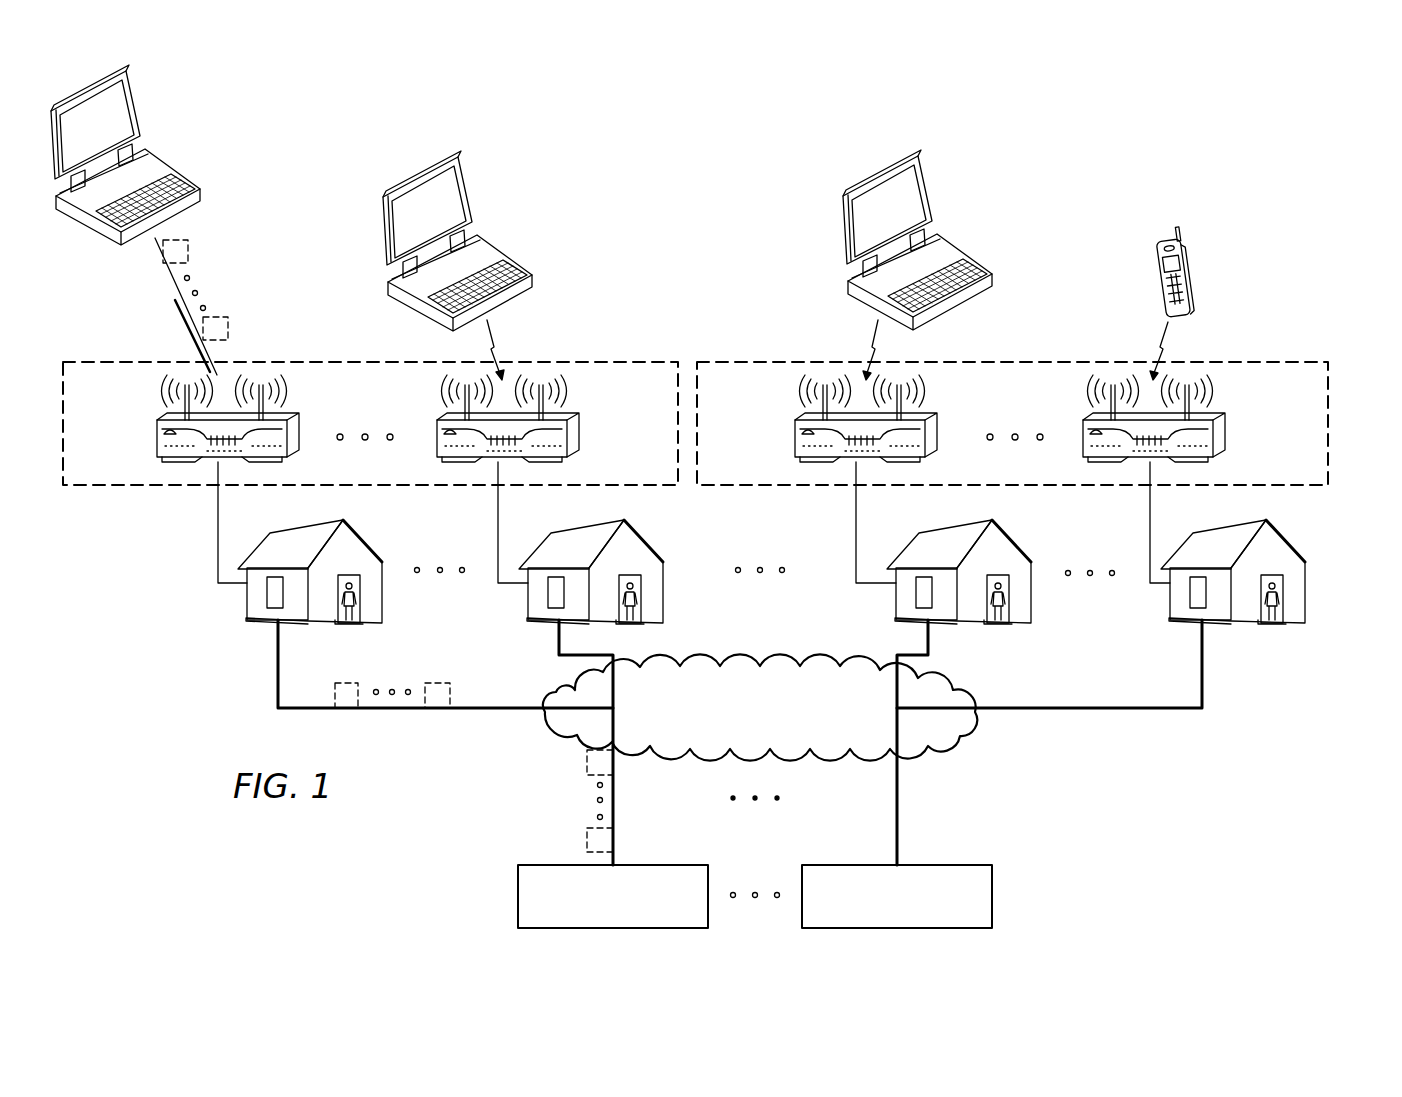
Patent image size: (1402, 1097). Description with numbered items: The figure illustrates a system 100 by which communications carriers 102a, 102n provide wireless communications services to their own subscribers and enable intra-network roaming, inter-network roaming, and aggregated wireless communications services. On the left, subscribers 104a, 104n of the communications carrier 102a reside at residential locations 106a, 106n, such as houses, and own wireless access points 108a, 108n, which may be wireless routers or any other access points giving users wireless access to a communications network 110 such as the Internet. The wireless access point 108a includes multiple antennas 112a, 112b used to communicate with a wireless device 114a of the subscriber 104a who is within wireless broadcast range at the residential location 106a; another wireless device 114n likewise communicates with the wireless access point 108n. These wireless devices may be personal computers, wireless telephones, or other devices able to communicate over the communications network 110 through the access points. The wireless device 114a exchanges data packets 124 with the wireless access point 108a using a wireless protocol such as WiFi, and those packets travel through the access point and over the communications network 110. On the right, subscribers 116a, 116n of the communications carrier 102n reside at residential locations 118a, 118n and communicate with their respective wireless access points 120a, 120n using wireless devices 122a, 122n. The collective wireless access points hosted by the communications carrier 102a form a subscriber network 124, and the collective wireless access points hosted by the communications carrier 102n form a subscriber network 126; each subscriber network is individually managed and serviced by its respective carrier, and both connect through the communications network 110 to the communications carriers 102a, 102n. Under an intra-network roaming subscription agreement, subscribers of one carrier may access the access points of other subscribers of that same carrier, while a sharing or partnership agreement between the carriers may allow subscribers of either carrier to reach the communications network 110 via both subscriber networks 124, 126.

The system 100 is at (742, 140).
The communications carrier 102a is at (518, 897).
The communications carrier 102n is at (992, 897).
The subscriber 104a is at (350, 573).
The subscriber 104n is at (631, 573).
The residential location 106a is at (247, 604).
The residential location 106n is at (528, 604).
The wireless access point 108a is at (212, 421).
The wireless access point 108n is at (580, 440).
The communications network 110 is at (765, 667).
The antenna 112a is at (184, 412).
The antenna 112b is at (266, 412).
The wireless device 114a is at (137, 103).
The wireless device 114n is at (470, 186).
The subscriber 116a is at (999, 573).
The subscriber 116n is at (1270, 573).
The residential location 118a is at (1031, 602).
The residential location 118n is at (1305, 602).
The wireless access point 120a is at (795, 441).
The wireless access point 120n is at (1225, 441).
The wireless device 122a is at (931, 186).
The wireless device 122n is at (1191, 275).
The subscriber network 124 is at (218, 322).
The subscriber network 126 is at (1034, 356).